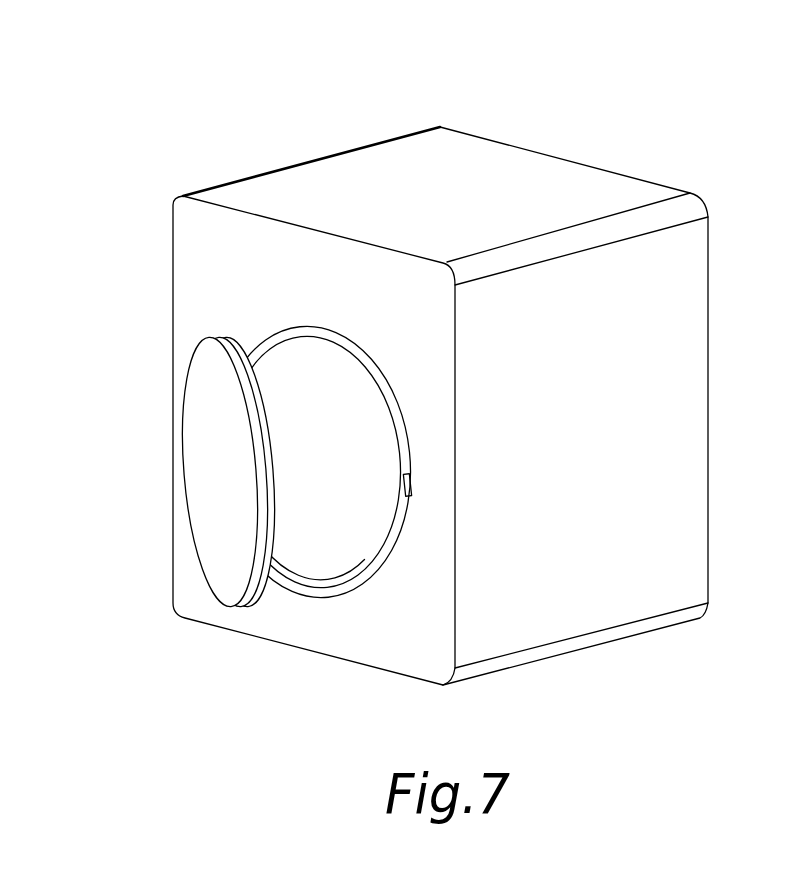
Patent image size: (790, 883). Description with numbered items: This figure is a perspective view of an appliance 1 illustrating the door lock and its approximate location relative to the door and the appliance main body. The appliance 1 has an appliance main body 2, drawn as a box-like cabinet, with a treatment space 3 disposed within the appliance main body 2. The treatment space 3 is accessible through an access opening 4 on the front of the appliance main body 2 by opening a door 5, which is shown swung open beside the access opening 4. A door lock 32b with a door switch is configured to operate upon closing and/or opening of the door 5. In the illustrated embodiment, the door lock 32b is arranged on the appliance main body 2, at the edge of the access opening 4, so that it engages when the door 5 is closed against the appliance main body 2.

The appliance 1 is at (168, 145).
The appliance main body 2 is at (413, 175).
The treatment space 3 is at (358, 502).
The access opening 4 is at (383, 400).
The door 5 is at (202, 444).
The door lock 32b is at (412, 485).